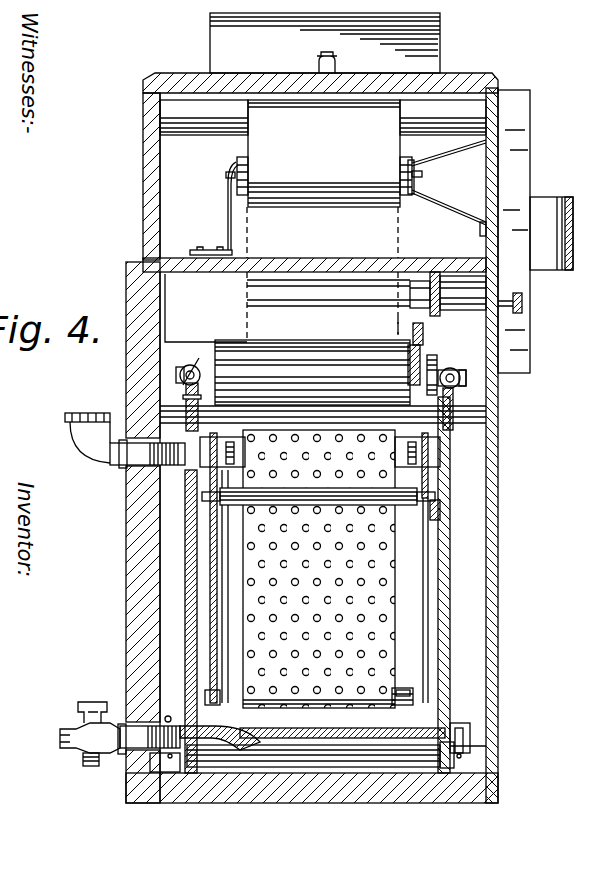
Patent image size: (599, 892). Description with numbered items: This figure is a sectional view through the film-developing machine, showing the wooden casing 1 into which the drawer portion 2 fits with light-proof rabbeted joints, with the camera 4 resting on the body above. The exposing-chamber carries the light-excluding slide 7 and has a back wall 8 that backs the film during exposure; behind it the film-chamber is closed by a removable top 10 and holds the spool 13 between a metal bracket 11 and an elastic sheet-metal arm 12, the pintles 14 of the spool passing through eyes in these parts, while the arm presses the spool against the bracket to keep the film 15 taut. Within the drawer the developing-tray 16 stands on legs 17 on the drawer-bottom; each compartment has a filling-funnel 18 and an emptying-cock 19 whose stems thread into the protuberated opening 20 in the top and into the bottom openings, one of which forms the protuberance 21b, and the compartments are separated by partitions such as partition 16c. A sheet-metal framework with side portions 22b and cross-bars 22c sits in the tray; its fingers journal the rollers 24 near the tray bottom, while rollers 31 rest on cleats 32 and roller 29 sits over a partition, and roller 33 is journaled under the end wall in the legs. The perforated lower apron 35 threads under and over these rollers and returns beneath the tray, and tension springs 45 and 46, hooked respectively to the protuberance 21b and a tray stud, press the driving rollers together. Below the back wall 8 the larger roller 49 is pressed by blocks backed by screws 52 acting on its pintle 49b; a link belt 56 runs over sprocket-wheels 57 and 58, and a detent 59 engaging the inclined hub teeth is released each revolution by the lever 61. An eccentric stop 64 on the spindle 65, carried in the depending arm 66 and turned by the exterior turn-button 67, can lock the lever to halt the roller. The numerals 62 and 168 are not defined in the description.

The wooden casing 1 is at (490, 644).
The drawer portion 2 is at (130, 258).
The camera 4 is at (518, 126).
The light-excluding slide 7 is at (437, 47).
The back wall 8 is at (322, 273).
The door or removable top 10 is at (475, 80).
The metal bracket 11 is at (467, 198).
The elastic sheet-metal arm 12 is at (226, 207).
The spool 13 is at (402, 199).
The pintles 14 is at (425, 178).
The film 15 is at (324, 153).
The developing-tray 16 is at (360, 740).
The partition 16c is at (470, 736).
The legs 17 is at (203, 770).
The filling-funnel 18 is at (67, 417).
The emptying-cock 19 is at (78, 746).
The protuberated opening 20 is at (155, 477).
The cock-opening protuberance 21b is at (141, 797).
The side portions 22b is at (430, 453).
The cross-bars 22c is at (425, 697).
The rollers 24 is at (430, 796).
The roller 29 is at (430, 472).
The rollers 31 is at (432, 540).
The cleats 32 is at (434, 517).
The roller 33 is at (425, 702).
The lower endless apron 35 is at (378, 706).
The tension helical spring 45 is at (166, 716).
The tension helical spring 46 is at (472, 752).
The larger roller 49 is at (333, 330).
The pintle 49b is at (462, 372).
The screws 52 is at (462, 378).
The link belt 56 is at (434, 356).
The sprocket-wheel 57 is at (455, 392).
The sprocket-wheel 58 is at (420, 352).
The detent 59 is at (421, 342).
The lever 61 is at (405, 328).
The shelf 62 is at (230, 127).
The eccentric stop 64 is at (410, 292).
The spindle 65 is at (468, 280).
The bracket or arm 66 is at (437, 276).
The turn-button 67 is at (518, 296).
The plate 168 is at (498, 422).